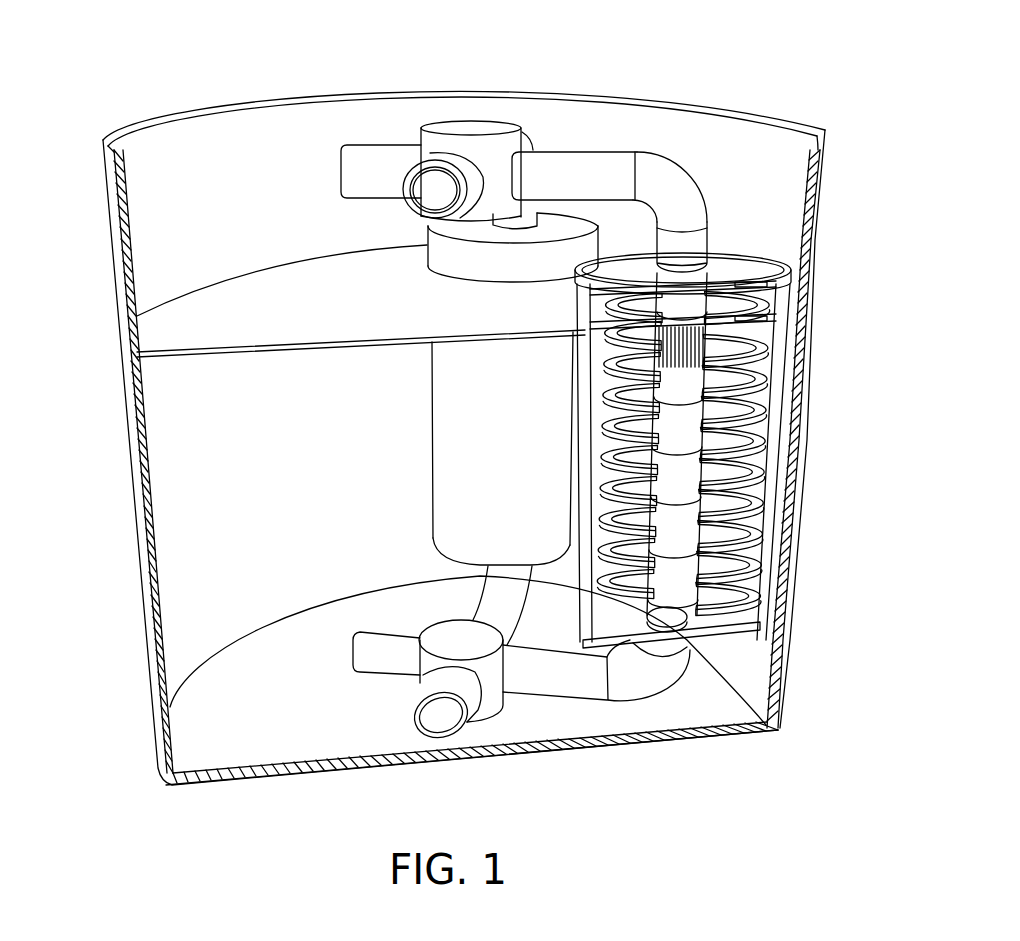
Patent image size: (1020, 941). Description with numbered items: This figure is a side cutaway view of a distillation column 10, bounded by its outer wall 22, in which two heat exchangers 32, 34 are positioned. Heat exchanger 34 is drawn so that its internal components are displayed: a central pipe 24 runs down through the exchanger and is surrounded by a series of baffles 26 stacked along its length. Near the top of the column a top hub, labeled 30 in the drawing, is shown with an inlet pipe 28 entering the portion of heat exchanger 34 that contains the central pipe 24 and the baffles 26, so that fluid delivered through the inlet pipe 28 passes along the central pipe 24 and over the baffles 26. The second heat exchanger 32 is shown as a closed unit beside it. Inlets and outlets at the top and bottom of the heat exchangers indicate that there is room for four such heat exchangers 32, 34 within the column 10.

The distillation column 10 is at (134, 513).
The outer wall 22 is at (487, 617).
The central pipe 24 is at (738, 285).
The baffles 26 is at (762, 383).
The inlet pipes 28 is at (695, 256).
The inlet tee fitting 30 is at (484, 122).
The heat exchanger 32 is at (516, 474).
The heat exchanger 34 is at (762, 551).